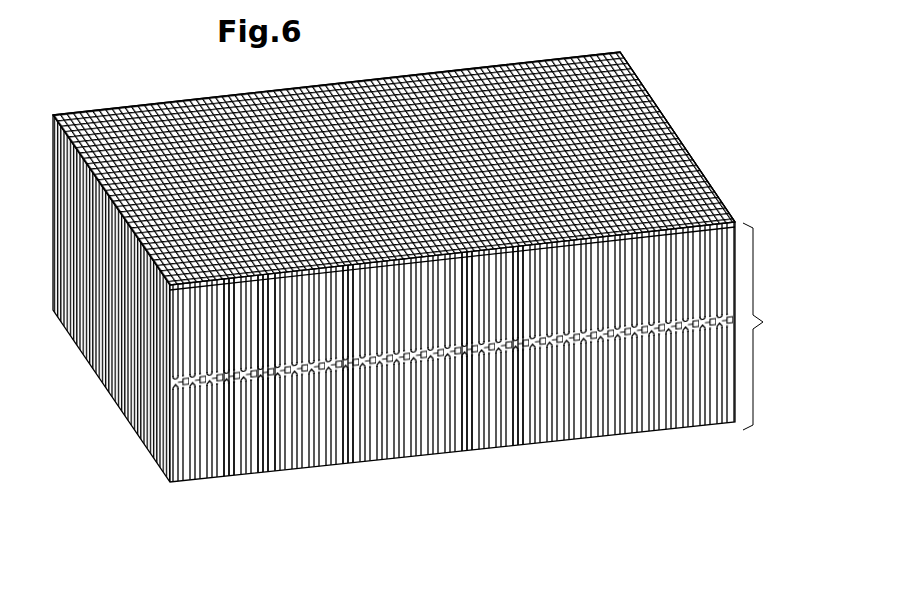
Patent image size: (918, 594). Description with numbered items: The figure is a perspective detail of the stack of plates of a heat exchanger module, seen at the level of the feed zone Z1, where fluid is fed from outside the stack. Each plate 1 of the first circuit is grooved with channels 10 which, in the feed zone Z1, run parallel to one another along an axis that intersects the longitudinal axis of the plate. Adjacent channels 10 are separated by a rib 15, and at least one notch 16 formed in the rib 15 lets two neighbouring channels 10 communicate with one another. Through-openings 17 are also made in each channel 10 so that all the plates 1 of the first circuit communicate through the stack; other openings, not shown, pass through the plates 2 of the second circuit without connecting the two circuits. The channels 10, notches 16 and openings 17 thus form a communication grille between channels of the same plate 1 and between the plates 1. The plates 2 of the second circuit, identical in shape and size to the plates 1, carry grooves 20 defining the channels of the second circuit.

The plate 1 is at (80, 112).
The plate of the second circuit 2 is at (723, 205).
The channel 10 is at (223, 476).
The rib 15 is at (347, 458).
The notch 16 is at (230, 394).
The through-opening 17 is at (463, 453).
The groove 20 is at (660, 103).
The feed zone Z1 is at (770, 326).